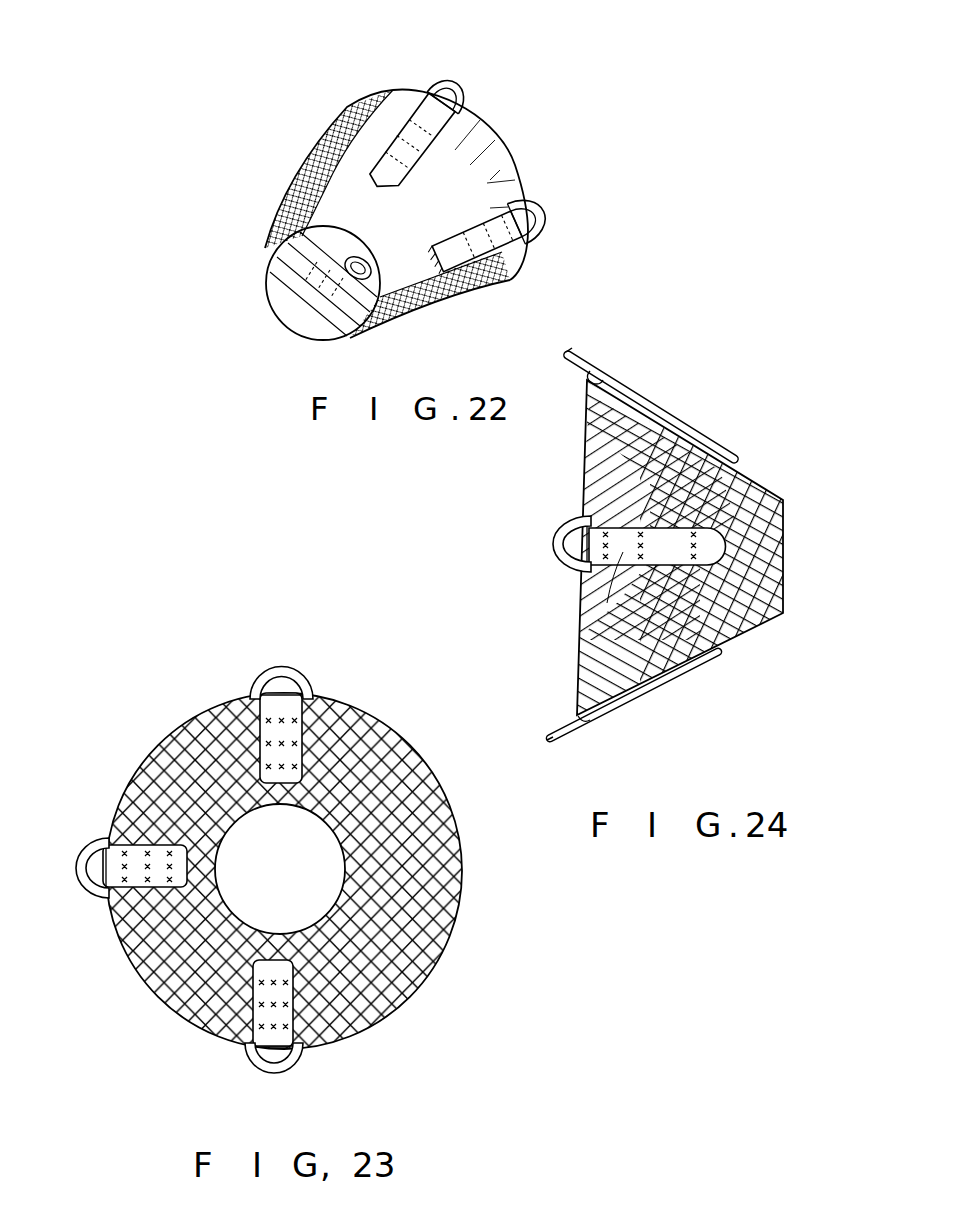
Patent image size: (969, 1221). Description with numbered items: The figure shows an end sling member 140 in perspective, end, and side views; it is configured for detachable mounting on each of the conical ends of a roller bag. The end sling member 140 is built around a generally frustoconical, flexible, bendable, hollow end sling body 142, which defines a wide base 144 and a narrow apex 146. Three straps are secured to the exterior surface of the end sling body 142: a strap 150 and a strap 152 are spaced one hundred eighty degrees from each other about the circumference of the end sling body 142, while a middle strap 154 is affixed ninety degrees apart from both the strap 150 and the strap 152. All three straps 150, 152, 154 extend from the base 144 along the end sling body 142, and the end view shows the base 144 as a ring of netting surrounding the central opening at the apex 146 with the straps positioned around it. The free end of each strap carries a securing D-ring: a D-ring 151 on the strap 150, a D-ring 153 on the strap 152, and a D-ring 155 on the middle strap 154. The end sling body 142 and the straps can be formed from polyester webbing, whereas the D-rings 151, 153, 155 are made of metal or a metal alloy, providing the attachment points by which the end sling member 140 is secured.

In FIG. 22, the end sling member 140 is at (422, 198).
In FIG. 22, the end sling body 142 is at (324, 152).
In FIG. 22, the base 144 is at (513, 167).
In FIG. 23, the base 144 is at (147, 997).
In FIG. 24, the base 144 is at (577, 668).
In FIG. 22, the apex 146 is at (265, 300).
In FIG. 24, the apex 146 is at (783, 523).
In FIG. 23, the strap 150 is at (330, 697).
In FIG. 24, the strap 150 is at (643, 397).
In FIG. 22, the securing D-ring 151 is at (463, 84).
In FIG. 23, the securing D-ring 151 is at (271, 667).
In FIG. 24, the securing D-ring 151 is at (578, 357).
In FIG. 23, the strap 152 is at (285, 1016).
In FIG. 24, the strap 152 is at (657, 680).
In FIG. 22, the securing D-ring 153 is at (556, 212).
In FIG. 23, the securing D-ring 153 is at (242, 1057).
In FIG. 24, the securing D-ring 153 is at (557, 735).
In FIG. 23, the middle strap 154 is at (137, 864).
In FIG. 24, the middle strap 154 is at (577, 637).
In FIG. 23, the securing D-ring 155 is at (93, 898).
In FIG. 24, the securing D-ring 155 is at (553, 541).